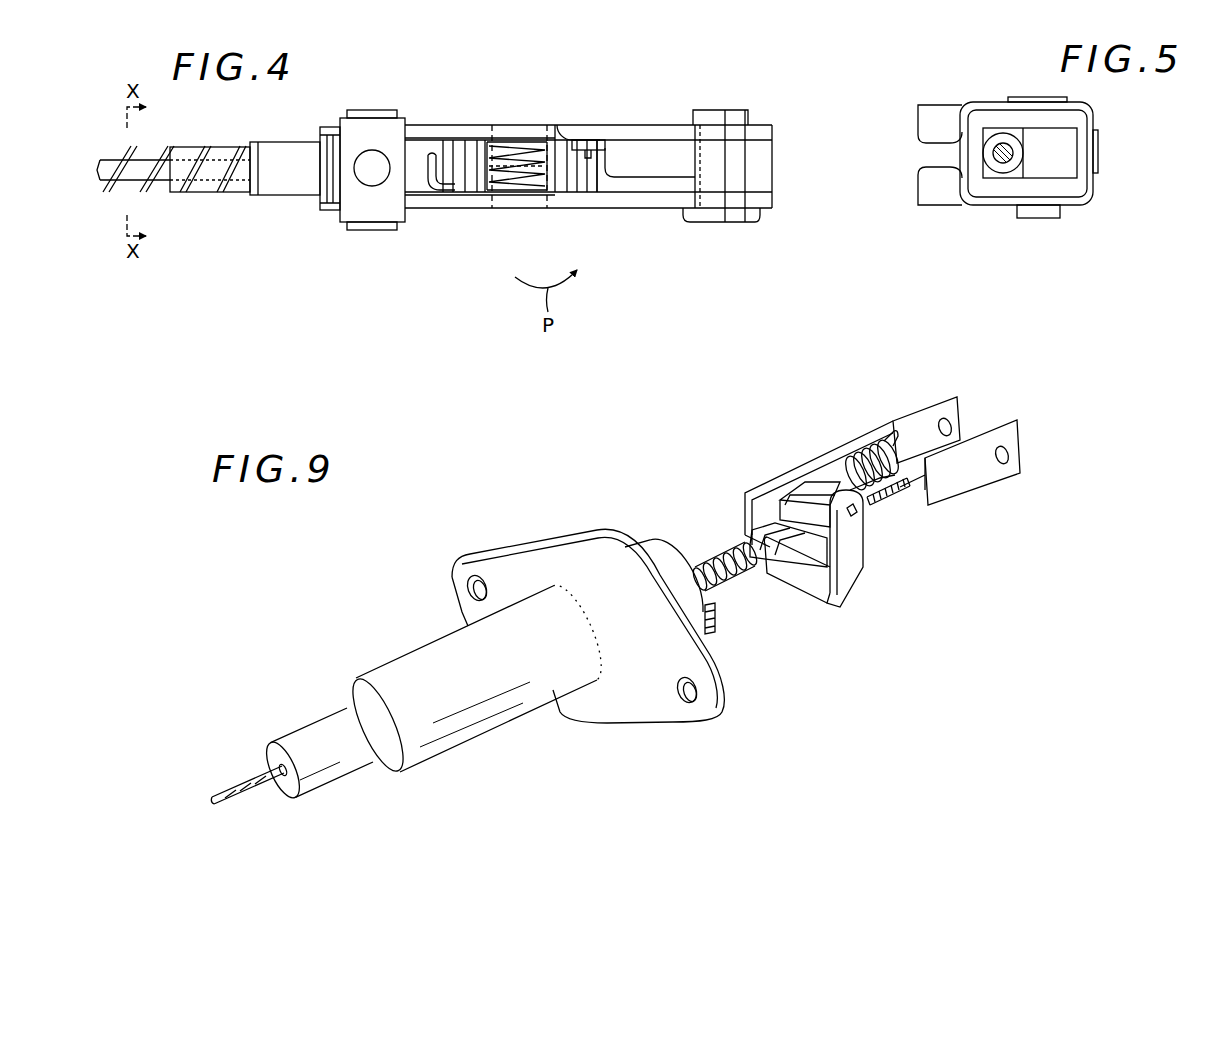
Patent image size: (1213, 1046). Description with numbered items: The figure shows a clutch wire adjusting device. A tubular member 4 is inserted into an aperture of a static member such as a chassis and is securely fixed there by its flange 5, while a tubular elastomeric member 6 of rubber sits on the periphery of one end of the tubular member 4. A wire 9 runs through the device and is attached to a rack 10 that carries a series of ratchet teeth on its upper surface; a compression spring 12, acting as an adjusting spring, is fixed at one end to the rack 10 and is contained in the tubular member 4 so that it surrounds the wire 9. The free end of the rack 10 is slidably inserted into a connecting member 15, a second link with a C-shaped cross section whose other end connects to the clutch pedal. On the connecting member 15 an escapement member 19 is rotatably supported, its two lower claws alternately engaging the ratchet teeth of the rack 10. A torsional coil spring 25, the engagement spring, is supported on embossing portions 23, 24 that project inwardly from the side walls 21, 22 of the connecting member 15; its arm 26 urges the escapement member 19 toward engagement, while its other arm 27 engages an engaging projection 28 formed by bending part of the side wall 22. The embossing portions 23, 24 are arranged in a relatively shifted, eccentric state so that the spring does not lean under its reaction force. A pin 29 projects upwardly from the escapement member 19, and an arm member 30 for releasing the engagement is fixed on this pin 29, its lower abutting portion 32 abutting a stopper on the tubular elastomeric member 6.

In FIG. 9, the tubular member 4 is at (422, 663).
In FIG. 9, the flange 5 is at (538, 557).
In FIG. 9, the tubular elastomeric member 6 is at (714, 634).
In FIG. 9, the wire 9 is at (240, 780).
In FIG. 4, the rack 10 is at (278, 190).
In FIG. 5, the rack 10 is at (1017, 177).
In FIG. 9, the rack 10 is at (888, 507).
In FIG. 9, the compression spring 12 is at (703, 560).
In FIG. 4, the connecting member 15 is at (657, 192).
In FIG. 9, the connecting member 15 is at (977, 482).
In FIG. 4, the escapement member 19 is at (333, 182).
In FIG. 5, the escapement member 19 is at (1058, 168).
In FIG. 9, the escapement member 19 is at (795, 497).
In FIG. 4, the side wall 21 is at (470, 130).
In FIG. 4, the side wall 22 is at (477, 207).
In FIG. 4, the embossing portion 23 is at (527, 140).
In FIG. 4, the embossing portion 24 is at (518, 192).
In FIG. 4, the torsional coil spring 25 is at (456, 193).
In FIG. 9, the torsional coil spring 25 is at (897, 433).
In FIG. 4, the arm 26 is at (426, 182).
In FIG. 4, the arm 27 is at (603, 140).
In FIG. 4, the engaging projection 28 is at (593, 135).
In FIG. 4, the pin 29 is at (373, 158).
In FIG. 4, the arm member 30 is at (398, 137).
In FIG. 5, the arm member 30 is at (993, 203).
In FIG. 9, the arm member 30 is at (848, 575).
In FIG. 5, the abutting portion 32 is at (927, 187).
In FIG. 9, the abutting portion 32 is at (820, 590).